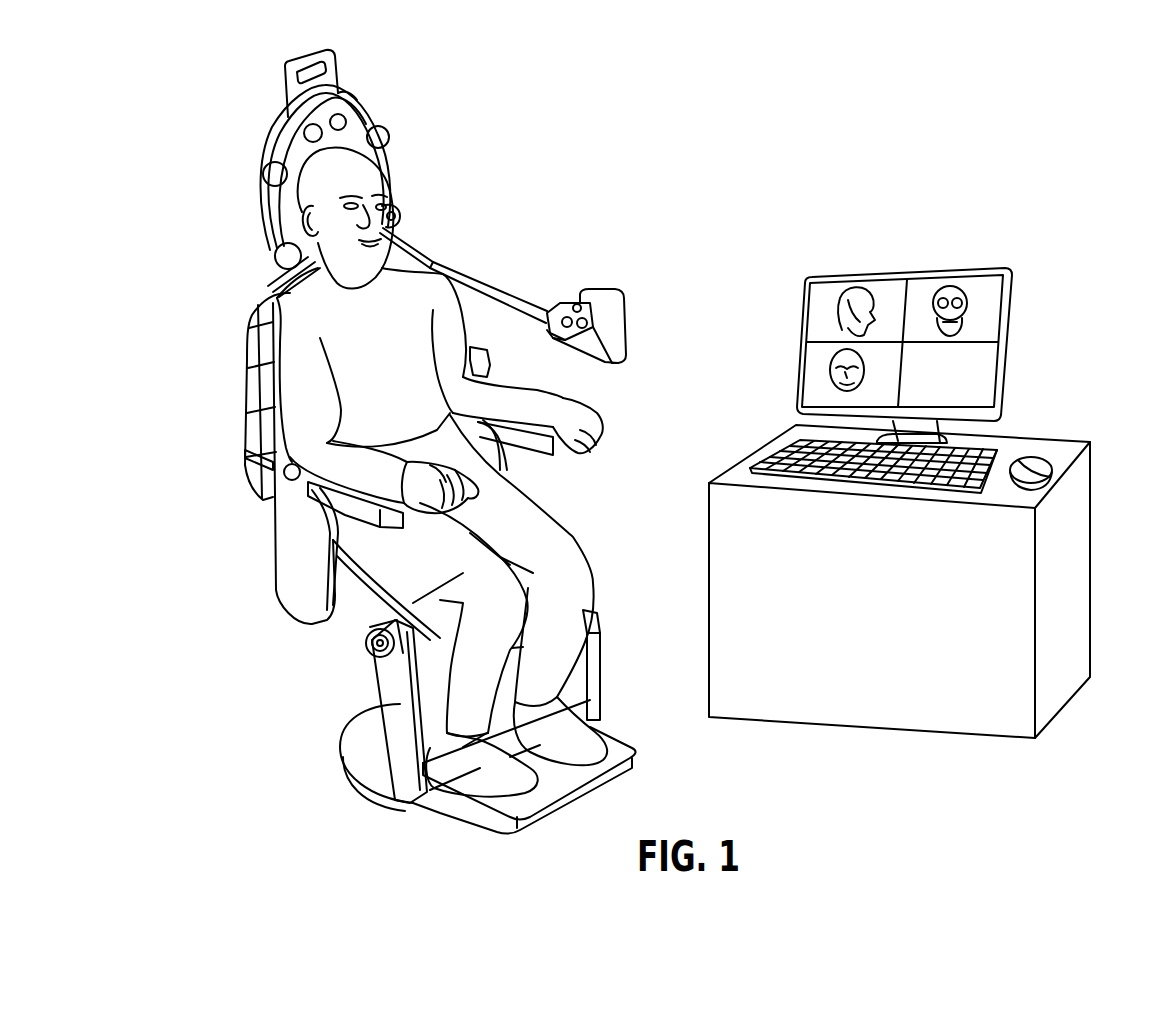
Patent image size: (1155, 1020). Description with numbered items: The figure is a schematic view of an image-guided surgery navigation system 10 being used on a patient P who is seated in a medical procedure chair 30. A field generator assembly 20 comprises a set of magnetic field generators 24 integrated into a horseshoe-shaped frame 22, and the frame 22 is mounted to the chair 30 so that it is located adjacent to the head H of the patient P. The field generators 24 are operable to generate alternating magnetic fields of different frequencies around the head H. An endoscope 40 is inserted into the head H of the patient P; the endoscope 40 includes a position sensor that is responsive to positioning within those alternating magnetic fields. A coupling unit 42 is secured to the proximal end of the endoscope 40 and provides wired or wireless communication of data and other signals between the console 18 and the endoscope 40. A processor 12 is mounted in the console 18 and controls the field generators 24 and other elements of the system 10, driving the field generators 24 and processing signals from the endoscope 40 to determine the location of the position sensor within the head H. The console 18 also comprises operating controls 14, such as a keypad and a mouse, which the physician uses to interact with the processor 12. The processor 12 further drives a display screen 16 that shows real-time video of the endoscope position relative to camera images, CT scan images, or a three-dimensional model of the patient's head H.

The system 10 is at (797, 154).
The processor 12 is at (769, 427).
The operating controls 14 is at (762, 460).
The display screen 16 is at (990, 272).
The console 18 is at (1070, 452).
The field generator assembly 20 is at (285, 133).
The horseshoe-shaped frame 22 is at (358, 103).
The magnetic field generators 24 is at (378, 135).
The chair 30 is at (286, 735).
The endoscope 40 is at (440, 267).
The coupling unit 42 is at (607, 292).
The head H is at (363, 177).
The patient P is at (459, 136).